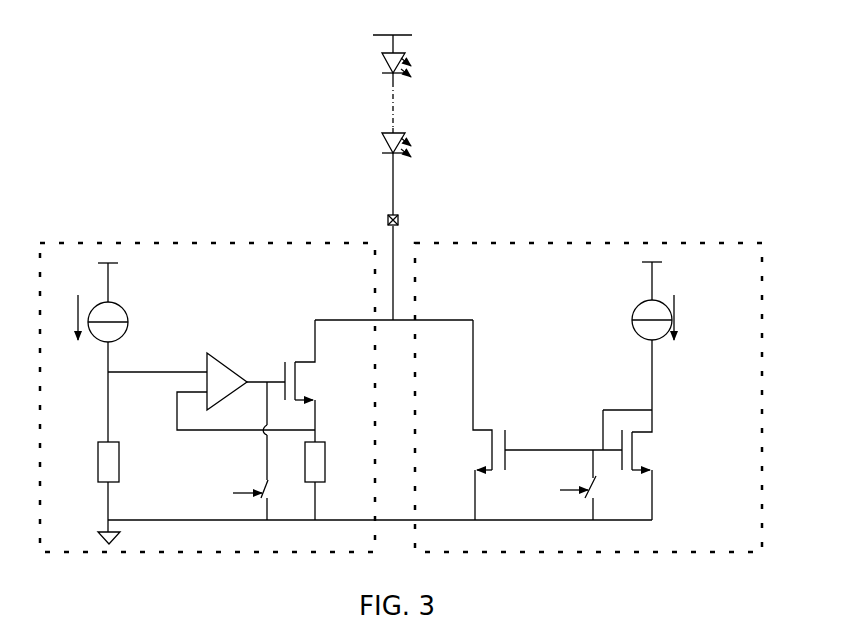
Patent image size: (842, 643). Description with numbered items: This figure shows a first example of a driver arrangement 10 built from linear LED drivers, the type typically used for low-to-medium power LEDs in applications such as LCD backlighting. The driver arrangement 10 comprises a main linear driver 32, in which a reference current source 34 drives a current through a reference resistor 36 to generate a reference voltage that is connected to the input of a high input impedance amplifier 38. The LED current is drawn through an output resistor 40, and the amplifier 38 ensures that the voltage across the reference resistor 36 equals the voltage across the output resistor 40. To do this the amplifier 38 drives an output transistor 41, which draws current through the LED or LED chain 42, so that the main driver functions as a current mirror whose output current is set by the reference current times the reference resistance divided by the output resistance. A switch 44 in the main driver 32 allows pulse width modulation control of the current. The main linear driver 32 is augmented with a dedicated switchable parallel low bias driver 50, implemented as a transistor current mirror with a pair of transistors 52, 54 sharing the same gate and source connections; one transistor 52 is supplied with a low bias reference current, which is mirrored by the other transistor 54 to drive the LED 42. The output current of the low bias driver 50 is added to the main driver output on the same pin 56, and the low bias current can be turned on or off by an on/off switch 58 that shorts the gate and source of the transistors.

The driver arrangement 10 is at (578, 111).
The main linear driver 32 is at (236, 242).
The reference current source 34 is at (128, 322).
The reference resistor 36 is at (119, 466).
The high input impedance amplifier 38 is at (222, 360).
The output resistor 40 is at (325, 470).
The output transistor 41 is at (305, 383).
The LED 42 is at (420, 114).
The switch 44 is at (262, 480).
The low bias driver 50 is at (606, 242).
The transistor 52 is at (645, 445).
The transistor 54 is at (490, 432).
The pin 56 is at (400, 220).
The on/off switch 58 is at (592, 480).